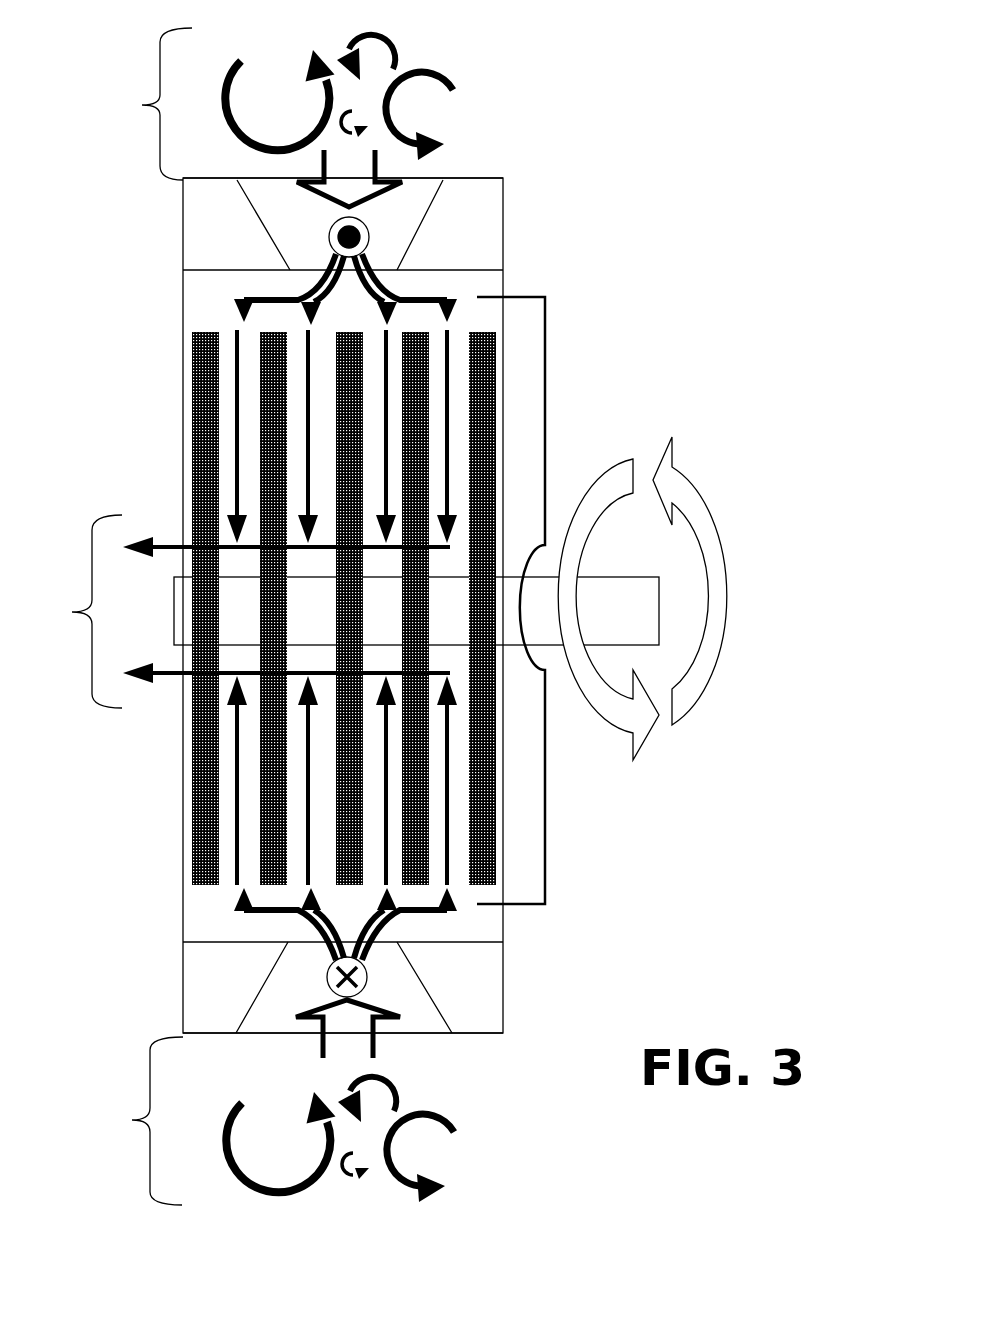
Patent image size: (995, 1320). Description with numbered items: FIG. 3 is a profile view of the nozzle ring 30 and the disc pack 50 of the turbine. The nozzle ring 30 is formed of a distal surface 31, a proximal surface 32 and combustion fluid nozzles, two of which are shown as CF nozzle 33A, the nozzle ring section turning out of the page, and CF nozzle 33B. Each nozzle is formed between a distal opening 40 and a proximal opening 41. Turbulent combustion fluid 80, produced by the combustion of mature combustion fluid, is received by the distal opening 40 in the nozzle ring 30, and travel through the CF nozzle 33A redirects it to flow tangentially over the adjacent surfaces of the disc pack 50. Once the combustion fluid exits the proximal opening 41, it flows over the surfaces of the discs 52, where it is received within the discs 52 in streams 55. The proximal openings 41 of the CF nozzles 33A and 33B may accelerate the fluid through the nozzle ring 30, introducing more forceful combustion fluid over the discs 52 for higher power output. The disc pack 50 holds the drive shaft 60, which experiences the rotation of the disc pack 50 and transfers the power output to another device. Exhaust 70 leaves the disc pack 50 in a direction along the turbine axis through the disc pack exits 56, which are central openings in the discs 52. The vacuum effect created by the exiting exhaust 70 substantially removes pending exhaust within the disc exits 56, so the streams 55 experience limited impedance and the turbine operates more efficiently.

The nozzle ring 30 is at (504, 222).
The distal surface 31 is at (500, 177).
The proximal surface 32 is at (222, 272).
The CF nozzle 33A is at (323, 232).
The CF nozzle 33B is at (319, 981).
The distal opening 40 is at (439, 172).
The proximal opening 41 is at (396, 276).
The disc pack 50 is at (545, 381).
The disc 52 is at (344, 608).
The stream 55 is at (349, 607).
The disc pack exit 56 is at (187, 527).
The drive shaft 60 is at (450, 598).
The exhaust 70 is at (71, 611).
The turbulent combustion fluid 80 is at (276, 616).